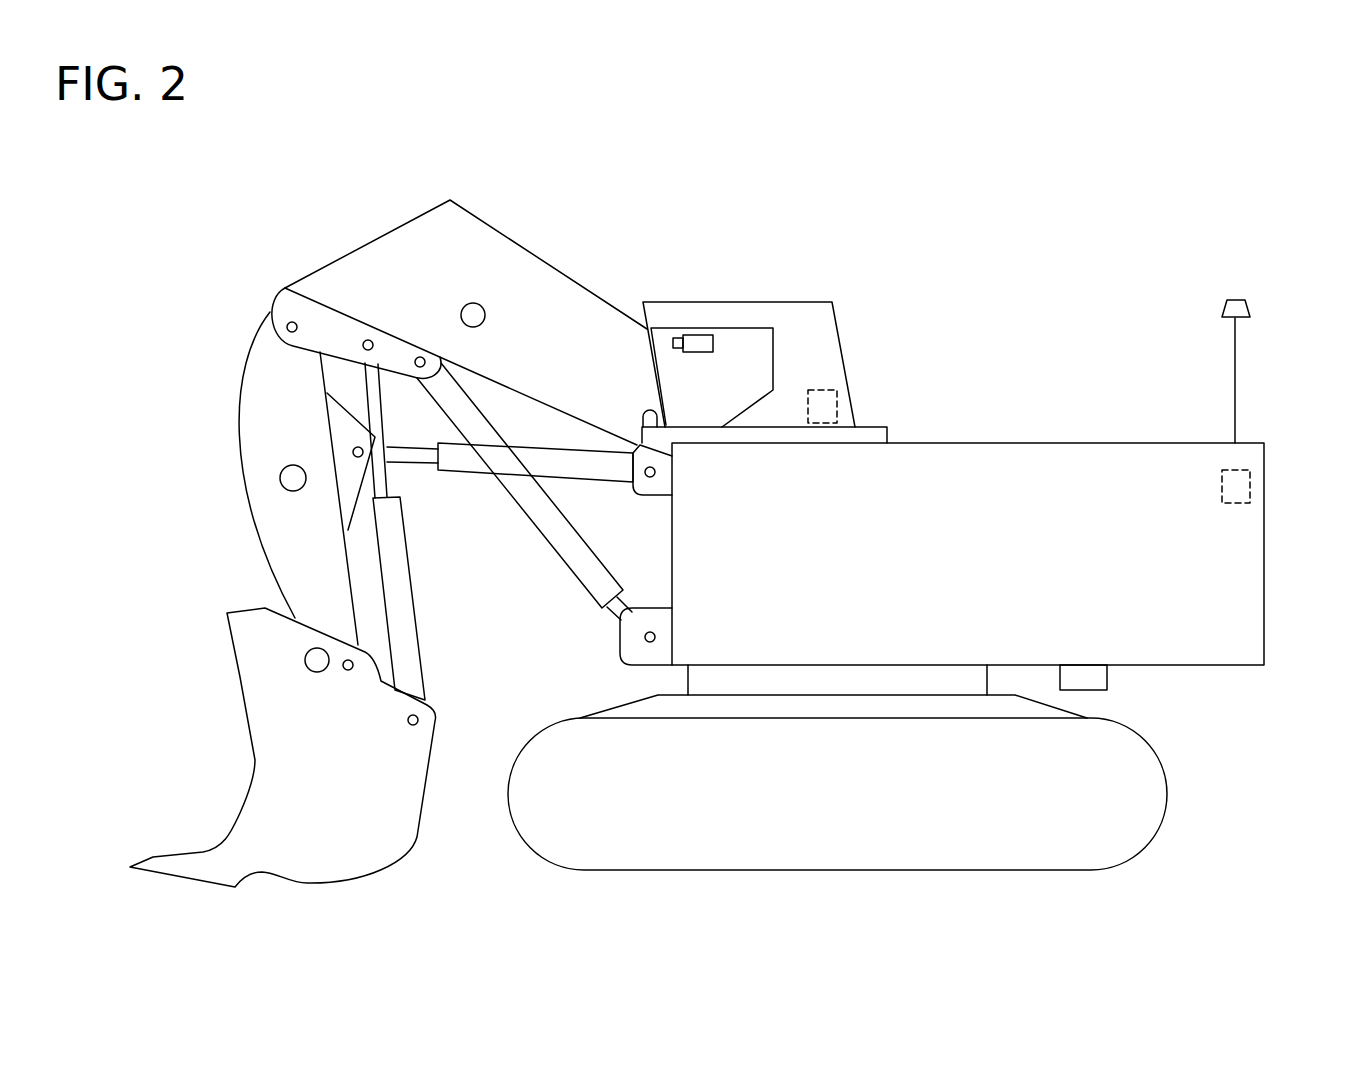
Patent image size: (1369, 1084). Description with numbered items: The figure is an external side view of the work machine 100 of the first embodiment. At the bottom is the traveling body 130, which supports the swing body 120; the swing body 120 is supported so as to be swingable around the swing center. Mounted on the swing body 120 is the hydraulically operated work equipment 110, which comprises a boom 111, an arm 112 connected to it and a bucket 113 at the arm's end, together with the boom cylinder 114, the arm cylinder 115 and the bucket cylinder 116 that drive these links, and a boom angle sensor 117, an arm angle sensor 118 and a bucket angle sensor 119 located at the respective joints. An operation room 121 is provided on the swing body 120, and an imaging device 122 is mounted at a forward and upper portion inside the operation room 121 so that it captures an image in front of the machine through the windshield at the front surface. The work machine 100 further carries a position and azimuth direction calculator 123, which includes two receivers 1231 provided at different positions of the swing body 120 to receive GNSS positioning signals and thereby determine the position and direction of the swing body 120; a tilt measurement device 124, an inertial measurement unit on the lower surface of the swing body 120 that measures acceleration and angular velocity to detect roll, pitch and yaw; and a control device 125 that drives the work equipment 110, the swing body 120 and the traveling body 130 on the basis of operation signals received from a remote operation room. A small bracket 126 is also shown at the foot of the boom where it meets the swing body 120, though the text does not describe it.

The work machine 100 is at (1166, 196).
The work equipment 110 is at (581, 208).
The boom 111 is at (510, 195).
The arm 112 is at (241, 396).
The bucket 113 is at (337, 883).
The boom cylinder 114 is at (583, 581).
The arm cylinder 115 is at (475, 473).
The bucket cylinder 116 is at (420, 609).
The boom angle sensor 117 is at (473, 303).
The arm angle sensor 118 is at (280, 478).
The bucket angle sensor 119 is at (305, 660).
The swing body 120 is at (1050, 443).
The operation room 121 is at (797, 302).
The imaging device 122 is at (697, 335).
The position and azimuth direction calculator 123 is at (1252, 486).
The receiver 1231 is at (1233, 298).
The tilt measurement device 124 is at (1108, 679).
The control device 125 is at (840, 404).
The boom attachment bracket 126 is at (650, 410).
The traveling body 130 is at (838, 871).